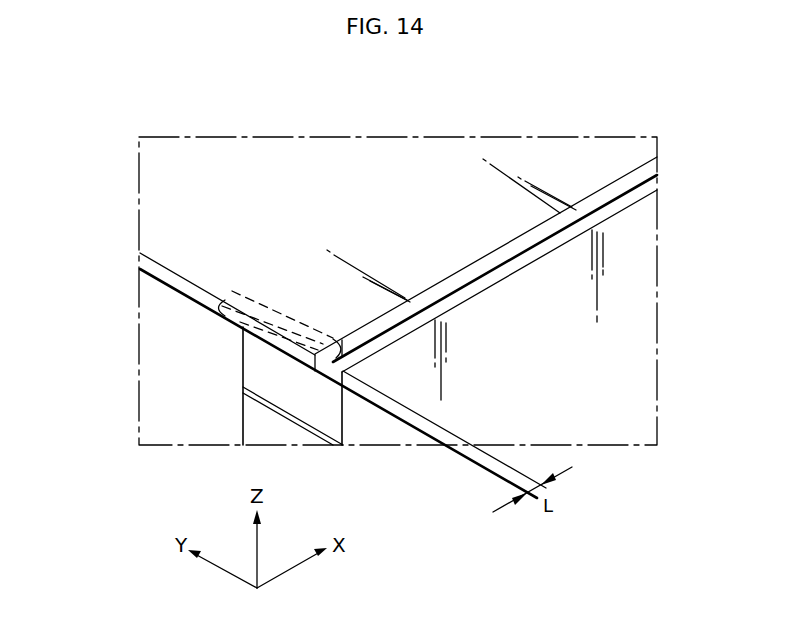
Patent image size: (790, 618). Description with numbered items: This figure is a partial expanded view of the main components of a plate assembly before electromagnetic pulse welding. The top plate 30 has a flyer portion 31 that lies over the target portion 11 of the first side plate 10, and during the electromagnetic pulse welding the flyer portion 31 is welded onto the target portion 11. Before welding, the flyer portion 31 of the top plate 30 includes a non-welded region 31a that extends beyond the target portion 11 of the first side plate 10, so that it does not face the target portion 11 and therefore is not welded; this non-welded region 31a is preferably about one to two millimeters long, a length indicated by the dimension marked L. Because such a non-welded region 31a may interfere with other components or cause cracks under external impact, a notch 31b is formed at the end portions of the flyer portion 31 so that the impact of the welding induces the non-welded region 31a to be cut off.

The first side plate 10 is at (617, 352).
The target portion 11 is at (615, 206).
The top plate 30 is at (393, 160).
The flyer portion 31 is at (590, 196).
The non-welded region 31a is at (243, 326).
The notch 31b is at (232, 291).